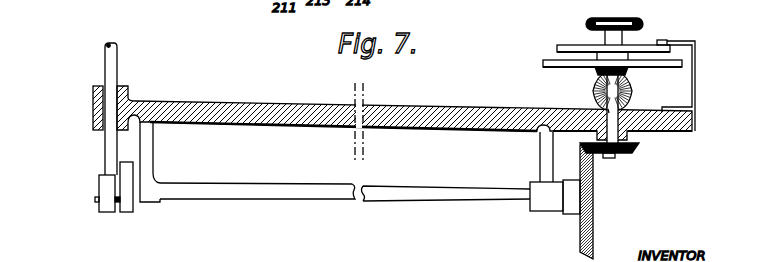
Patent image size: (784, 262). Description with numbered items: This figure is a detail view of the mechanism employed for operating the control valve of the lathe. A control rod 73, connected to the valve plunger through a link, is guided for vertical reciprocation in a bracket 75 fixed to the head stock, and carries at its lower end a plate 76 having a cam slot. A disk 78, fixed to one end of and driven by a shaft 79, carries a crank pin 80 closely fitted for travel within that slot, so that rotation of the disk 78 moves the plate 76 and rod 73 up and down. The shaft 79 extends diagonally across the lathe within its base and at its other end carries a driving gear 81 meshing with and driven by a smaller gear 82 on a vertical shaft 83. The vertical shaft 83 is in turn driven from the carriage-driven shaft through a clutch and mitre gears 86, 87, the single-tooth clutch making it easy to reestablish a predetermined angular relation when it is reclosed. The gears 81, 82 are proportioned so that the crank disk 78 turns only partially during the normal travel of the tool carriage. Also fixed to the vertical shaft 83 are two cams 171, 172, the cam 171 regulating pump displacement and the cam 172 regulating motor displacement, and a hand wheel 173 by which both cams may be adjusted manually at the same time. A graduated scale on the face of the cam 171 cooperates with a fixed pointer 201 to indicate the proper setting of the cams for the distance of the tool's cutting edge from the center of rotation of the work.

The control rod 73 is at (116, 57).
The bracket 75 is at (93, 104).
The plate 76 is at (107, 210).
The disk 78 is at (125, 210).
The shaft 79 is at (254, 184).
The crank pin 80 is at (95, 199).
The driving gear 81 is at (590, 186).
The smaller gear 82 is at (636, 149).
The vertical shaft 83 is at (605, 111).
The mitre gear 86 is at (631, 91).
The mitre gear 87 is at (596, 73).
The cam 171 is at (577, 42).
The cam 172 is at (550, 61).
The hand wheel 173 is at (635, 16).
The fixed pointer 201 is at (666, 38).